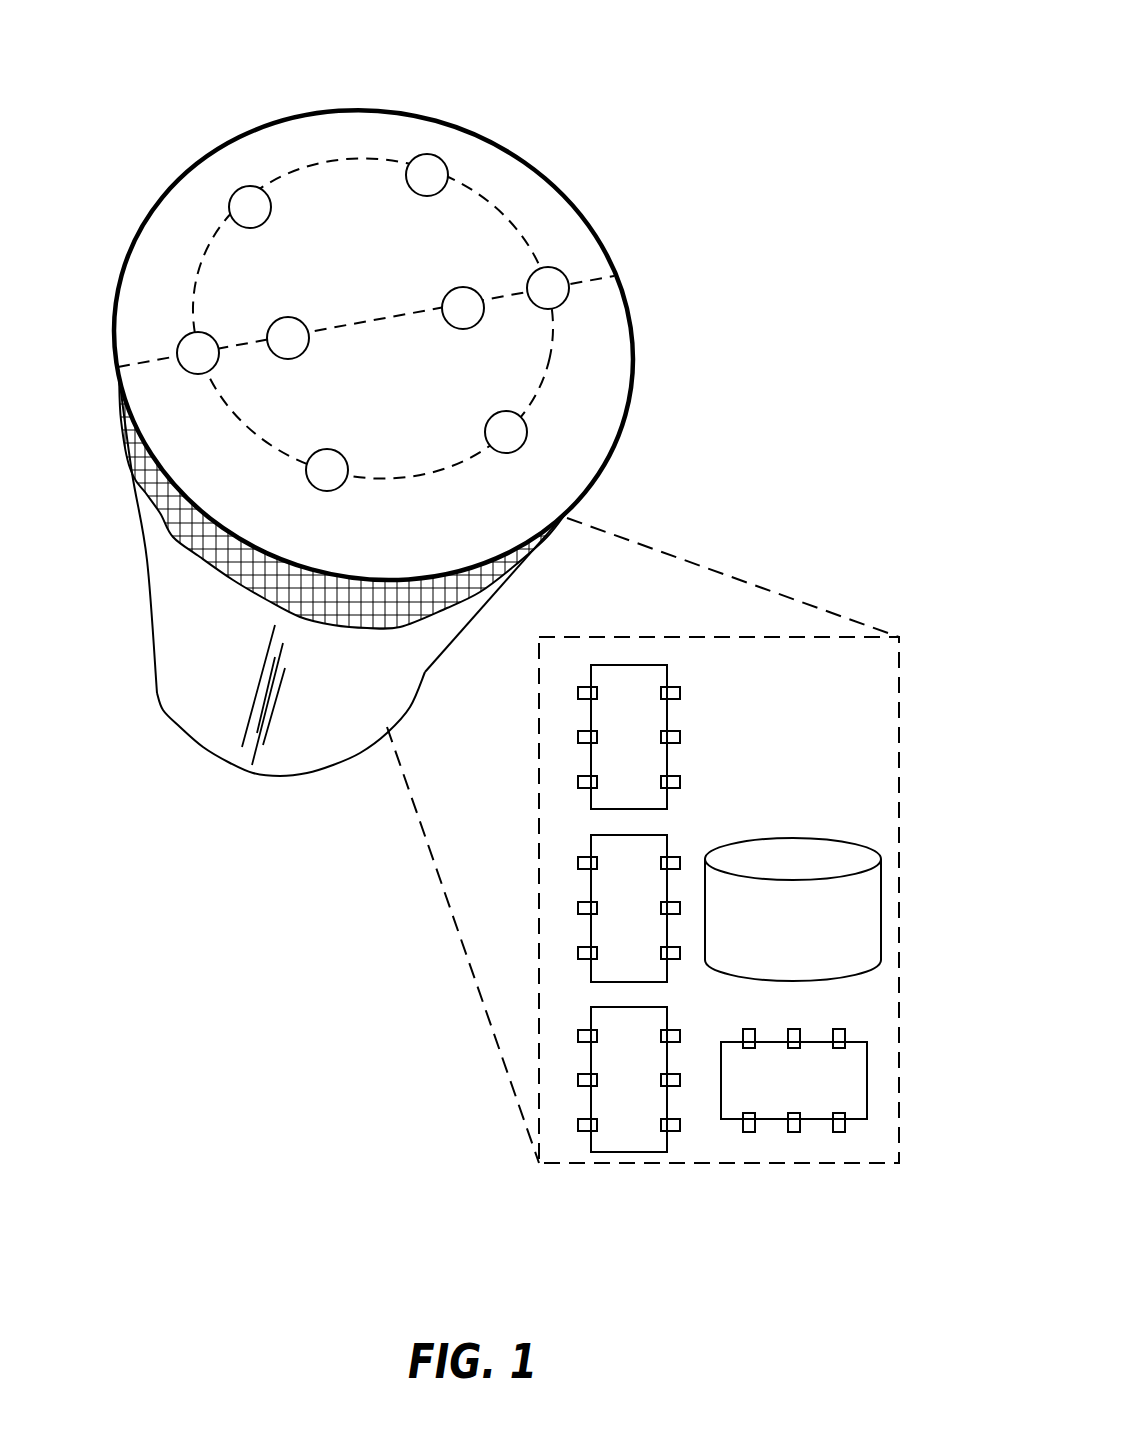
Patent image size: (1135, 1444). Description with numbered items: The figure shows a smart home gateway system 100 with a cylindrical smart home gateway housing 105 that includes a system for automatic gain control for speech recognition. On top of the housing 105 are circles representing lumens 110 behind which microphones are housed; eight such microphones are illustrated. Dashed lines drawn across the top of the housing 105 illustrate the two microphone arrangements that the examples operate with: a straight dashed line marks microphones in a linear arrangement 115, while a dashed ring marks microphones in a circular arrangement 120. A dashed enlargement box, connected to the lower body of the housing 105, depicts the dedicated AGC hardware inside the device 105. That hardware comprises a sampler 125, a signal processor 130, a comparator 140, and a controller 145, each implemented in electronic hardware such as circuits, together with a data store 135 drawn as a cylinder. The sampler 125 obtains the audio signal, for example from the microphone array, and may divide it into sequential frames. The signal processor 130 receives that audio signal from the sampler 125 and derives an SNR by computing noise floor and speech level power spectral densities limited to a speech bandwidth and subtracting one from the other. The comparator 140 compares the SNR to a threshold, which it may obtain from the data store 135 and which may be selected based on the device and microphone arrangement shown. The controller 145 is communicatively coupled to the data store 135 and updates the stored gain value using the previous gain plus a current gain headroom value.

The sensor system 100 is at (781, 31).
The smart home gateway housing 105 is at (171, 188).
The lumens 110 is at (427, 155).
The linear arrangement 115 is at (377, 322).
The circular arrangement 120 is at (549, 369).
The sampler 125 is at (679, 737).
The signal processor 130 is at (578, 906).
The data store 135 is at (795, 838).
The comparator 140 is at (627, 1153).
The controller 145 is at (795, 1133).